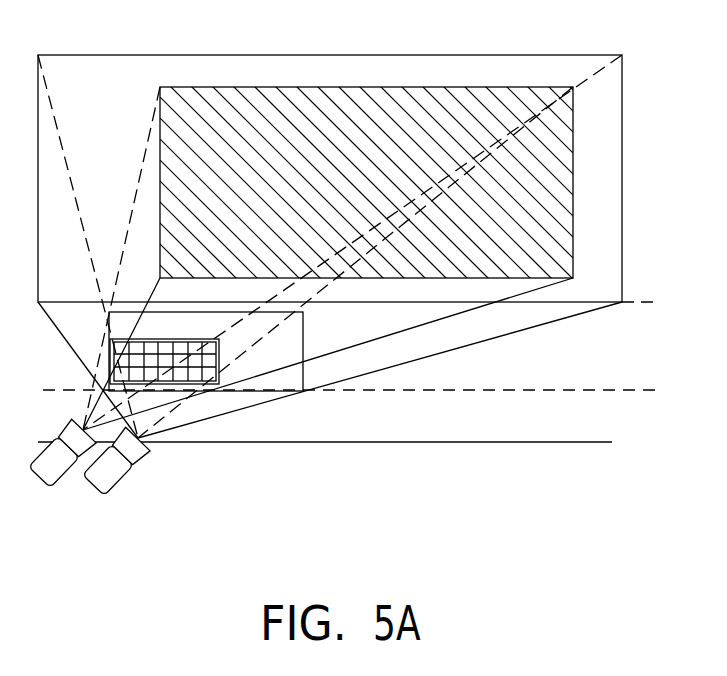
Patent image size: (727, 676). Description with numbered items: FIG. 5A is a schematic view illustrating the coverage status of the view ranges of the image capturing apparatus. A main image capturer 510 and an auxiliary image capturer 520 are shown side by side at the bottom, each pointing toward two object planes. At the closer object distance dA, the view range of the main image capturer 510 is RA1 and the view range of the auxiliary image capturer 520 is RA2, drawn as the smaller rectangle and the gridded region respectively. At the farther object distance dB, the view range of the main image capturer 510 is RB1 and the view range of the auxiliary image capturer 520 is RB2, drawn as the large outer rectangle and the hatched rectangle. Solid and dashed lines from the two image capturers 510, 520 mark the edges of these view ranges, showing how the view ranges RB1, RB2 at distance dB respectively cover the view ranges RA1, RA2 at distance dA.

The view range RB1 is at (523, 55).
The view range RB2 is at (573, 165).
The view range RA1 is at (303, 335).
The view range RA2 is at (220, 355).
The object distance dB is at (659, 300).
The object distance dA is at (370, 387).
The main image capturer 510 is at (53, 472).
The auxiliary image capturer 520 is at (117, 477).